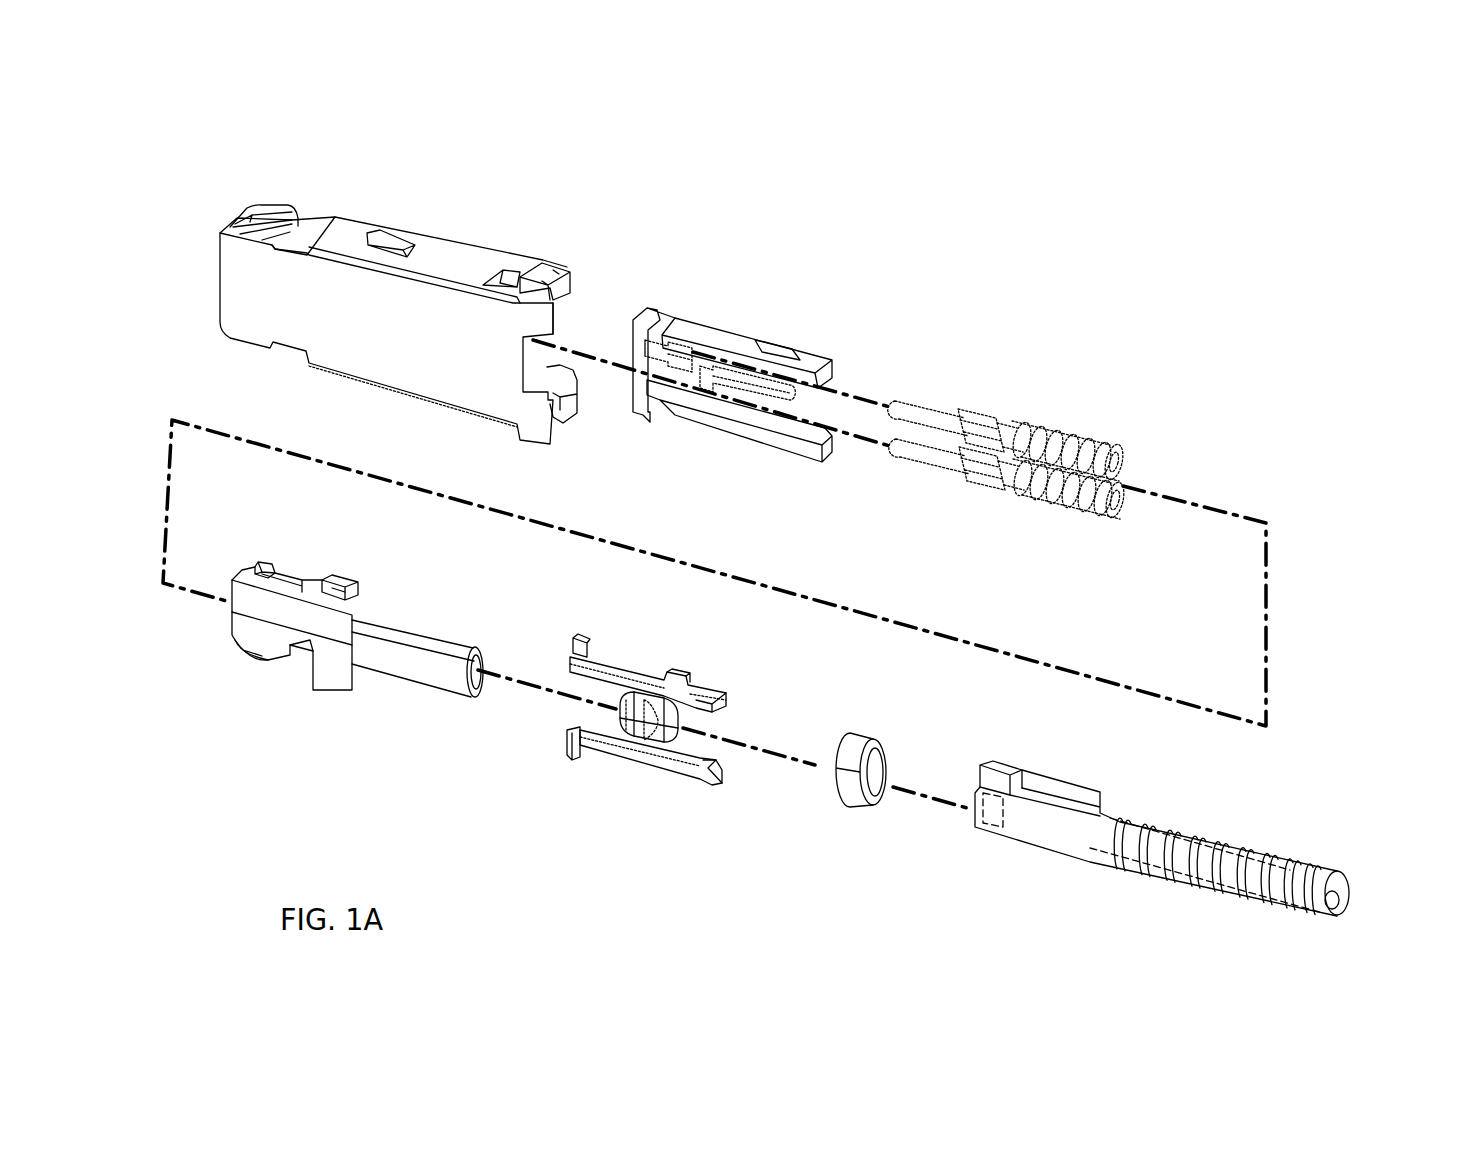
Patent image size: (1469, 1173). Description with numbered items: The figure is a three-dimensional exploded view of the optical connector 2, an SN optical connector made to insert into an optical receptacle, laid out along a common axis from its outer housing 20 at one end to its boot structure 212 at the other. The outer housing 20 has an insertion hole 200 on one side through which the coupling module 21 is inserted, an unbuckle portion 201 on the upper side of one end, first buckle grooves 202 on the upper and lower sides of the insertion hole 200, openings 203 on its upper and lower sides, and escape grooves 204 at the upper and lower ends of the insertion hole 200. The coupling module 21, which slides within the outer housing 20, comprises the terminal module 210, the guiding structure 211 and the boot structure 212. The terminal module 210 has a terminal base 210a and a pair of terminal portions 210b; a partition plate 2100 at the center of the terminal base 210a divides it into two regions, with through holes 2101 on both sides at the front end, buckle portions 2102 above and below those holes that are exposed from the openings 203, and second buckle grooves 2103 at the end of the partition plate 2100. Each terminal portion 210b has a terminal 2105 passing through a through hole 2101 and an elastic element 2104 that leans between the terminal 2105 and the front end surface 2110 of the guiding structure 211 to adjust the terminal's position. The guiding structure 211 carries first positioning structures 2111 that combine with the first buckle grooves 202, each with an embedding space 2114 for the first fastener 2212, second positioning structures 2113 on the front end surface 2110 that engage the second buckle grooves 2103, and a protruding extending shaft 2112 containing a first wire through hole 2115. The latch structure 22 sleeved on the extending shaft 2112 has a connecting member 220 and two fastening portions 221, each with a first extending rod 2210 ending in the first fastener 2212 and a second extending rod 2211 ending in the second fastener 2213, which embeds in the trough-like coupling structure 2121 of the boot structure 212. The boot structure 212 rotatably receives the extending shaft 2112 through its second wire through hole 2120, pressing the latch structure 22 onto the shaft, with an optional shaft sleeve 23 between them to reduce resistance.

The optical connector 2 is at (197, 185).
The outer housing 20 is at (440, 262).
The insertion hole 200 is at (556, 380).
The unbuckle portion 201 is at (262, 205).
The first buckle groove 202 is at (510, 281).
The opening 203 is at (288, 232).
The escape groove 204 is at (566, 302).
The coupling module 21 is at (1155, 413).
The terminal module 210 is at (1060, 342).
The terminal base 210a is at (742, 336).
The terminal portion 210b is at (1023, 410).
The partition plate 2100 is at (730, 380).
The through hole 2101 is at (648, 386).
The buckle portion 2102 is at (665, 325).
The second buckle groove 2103 is at (780, 352).
The elastic element 2104 is at (1105, 520).
The terminal 2105 is at (937, 462).
The guiding structure 211 is at (245, 560).
The front end surface 2110 is at (240, 605).
The first positioning structure 2111 is at (355, 594).
The extending shaft 2112 is at (413, 660).
The second positioning structure 2113 is at (262, 568).
The embedding space 2114 is at (318, 578).
The first wire through hole 2115 is at (482, 664).
The latch structure 22 is at (497, 840).
The connecting member 220 is at (630, 742).
The fastening portion 221 is at (572, 762).
The first extending rod 2210 is at (596, 660).
The second extending rod 2211 is at (688, 680).
The first fastener 2212 is at (580, 642).
The second fastener 2213 is at (712, 690).
The shaft sleeve 23 is at (850, 792).
The boot structure 212 is at (1287, 822).
The second wire through hole 2120 is at (1335, 890).
The coupling structure 2121 is at (1025, 780).